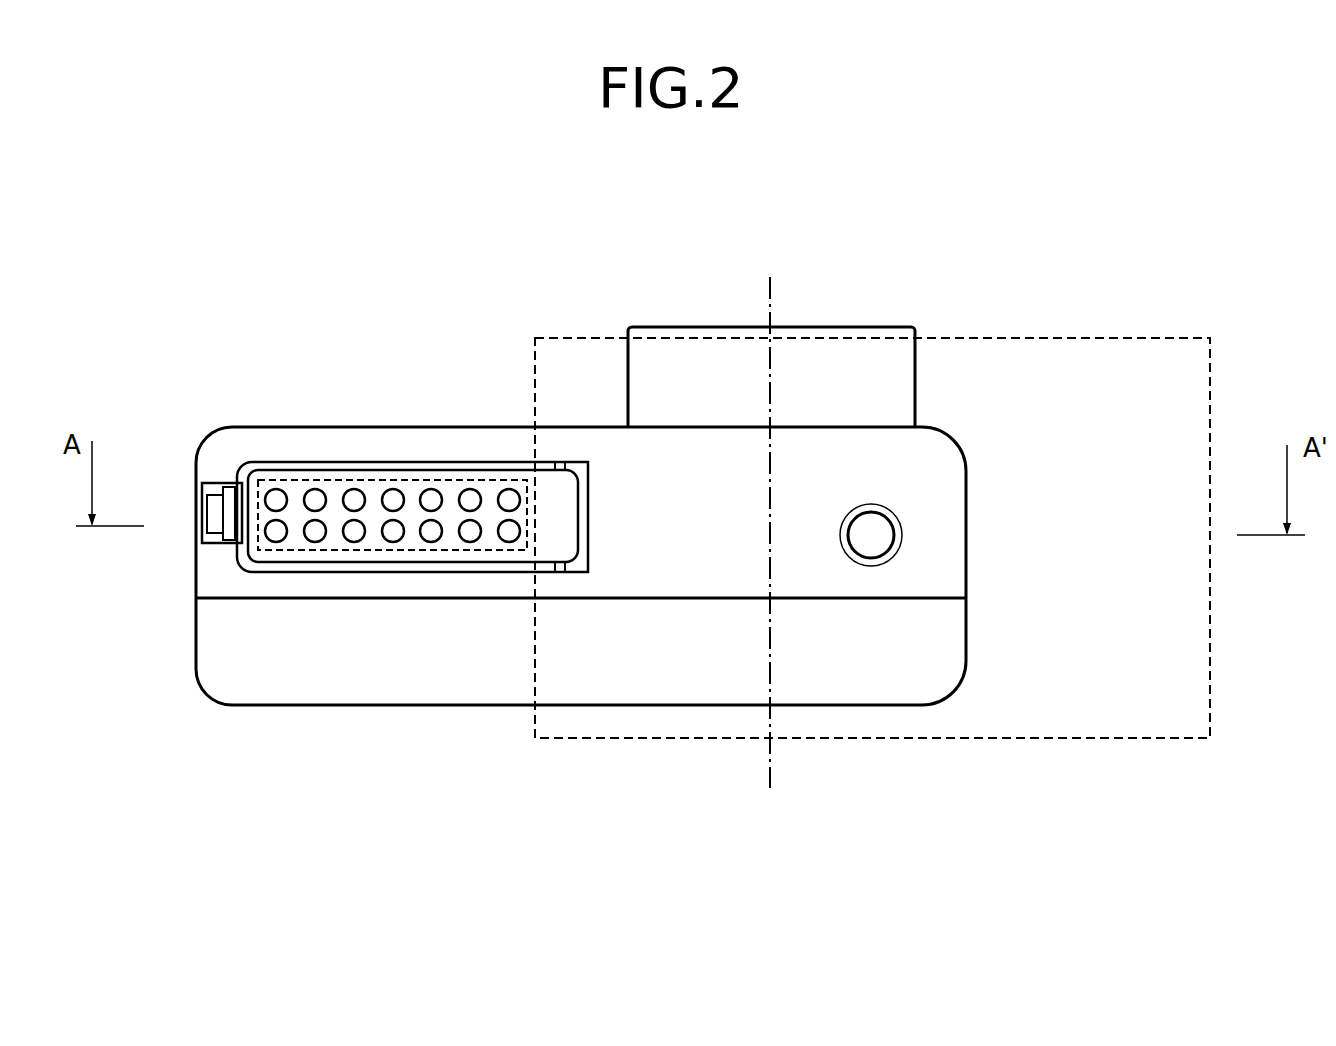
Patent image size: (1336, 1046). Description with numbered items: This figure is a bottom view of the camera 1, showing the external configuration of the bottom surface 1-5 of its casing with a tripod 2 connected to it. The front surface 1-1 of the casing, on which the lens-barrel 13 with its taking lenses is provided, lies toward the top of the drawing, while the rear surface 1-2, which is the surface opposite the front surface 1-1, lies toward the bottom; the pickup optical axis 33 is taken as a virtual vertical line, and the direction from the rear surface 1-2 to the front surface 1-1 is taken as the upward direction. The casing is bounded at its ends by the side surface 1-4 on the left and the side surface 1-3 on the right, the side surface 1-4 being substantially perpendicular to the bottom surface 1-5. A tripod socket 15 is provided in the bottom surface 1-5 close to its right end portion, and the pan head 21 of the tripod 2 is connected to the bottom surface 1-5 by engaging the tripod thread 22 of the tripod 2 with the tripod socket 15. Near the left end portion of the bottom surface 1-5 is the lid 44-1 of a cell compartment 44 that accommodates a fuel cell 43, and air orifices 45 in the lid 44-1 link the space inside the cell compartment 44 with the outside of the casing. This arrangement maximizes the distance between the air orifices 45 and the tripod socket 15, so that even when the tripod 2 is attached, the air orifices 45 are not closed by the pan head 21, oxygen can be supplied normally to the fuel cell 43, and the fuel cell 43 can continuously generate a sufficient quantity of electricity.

The camera 1 is at (585, 595).
The front surface 1-1 is at (470, 427).
The rear surface 1-2 is at (440, 708).
The right side surface of housing 1-3 is at (968, 565).
The side surface 1-4 is at (194, 572).
The bottom surface 1-5 is at (247, 655).
The tripod 2 is at (929, 489).
The lens-barrel 13 is at (902, 335).
The tripod socket 15 is at (872, 566).
The pan head 21 is at (1075, 337).
The tripod thread 22 is at (880, 527).
The pickup optical axis 33 is at (773, 550).
The fuel cell 43 is at (358, 480).
The cell compartment 44 is at (295, 464).
The lid 44-1 is at (553, 510).
The air orifices 45 is at (270, 497).